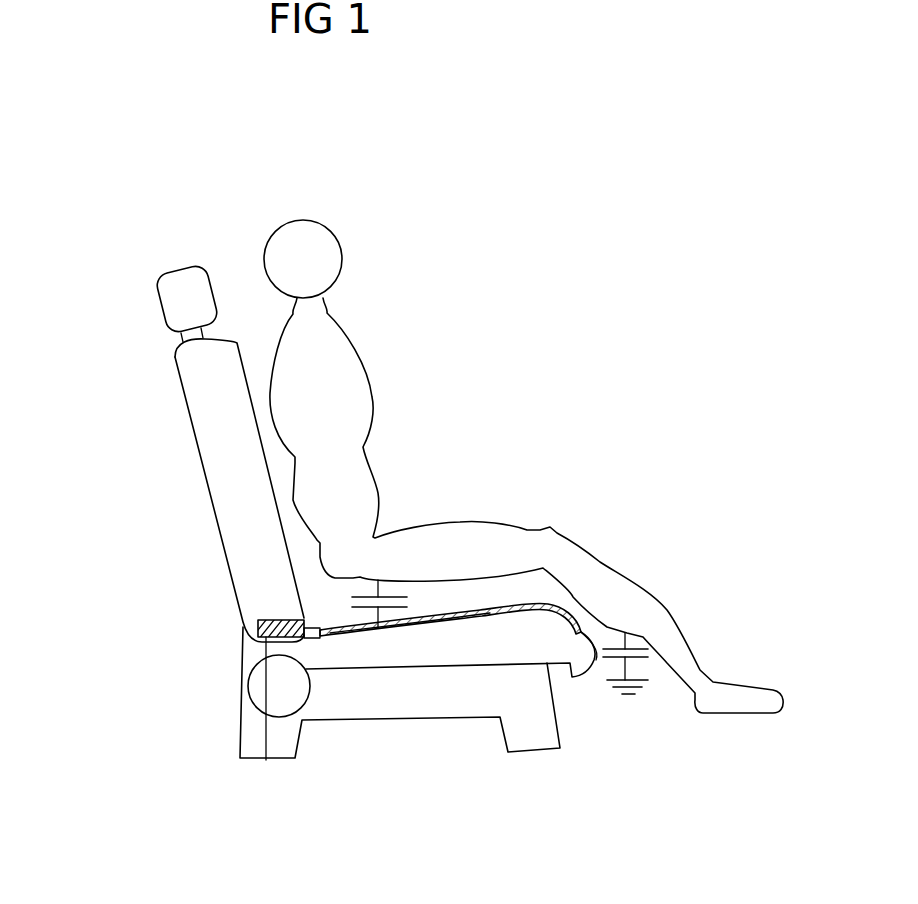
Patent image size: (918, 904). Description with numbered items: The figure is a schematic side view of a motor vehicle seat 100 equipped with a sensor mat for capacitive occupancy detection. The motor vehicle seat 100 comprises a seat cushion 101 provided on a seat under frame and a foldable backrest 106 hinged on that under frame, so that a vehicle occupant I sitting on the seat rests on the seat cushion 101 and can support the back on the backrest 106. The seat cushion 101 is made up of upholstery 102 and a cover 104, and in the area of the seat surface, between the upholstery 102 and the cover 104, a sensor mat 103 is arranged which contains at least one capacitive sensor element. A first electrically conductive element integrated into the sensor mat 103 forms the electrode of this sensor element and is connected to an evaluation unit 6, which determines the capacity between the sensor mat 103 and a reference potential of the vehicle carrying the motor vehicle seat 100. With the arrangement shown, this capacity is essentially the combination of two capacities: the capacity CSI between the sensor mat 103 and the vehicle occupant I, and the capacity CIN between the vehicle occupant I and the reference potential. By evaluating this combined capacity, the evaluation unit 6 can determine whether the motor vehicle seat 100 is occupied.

The vehicle occupant I is at (385, 395).
The motor vehicle seat 100 is at (415, 526).
The seat cushion 101 is at (607, 625).
The upholstery 102 is at (437, 648).
The sensor mat 103 is at (533, 605).
The cover 104 is at (505, 607).
The backrest 106 is at (207, 492).
The evaluation unit 6 is at (257, 625).
The capacity between the sensor mat and the vehicle occupant CSI is at (403, 604).
The capacity between the vehicle occupant and the reference potential CIN is at (643, 675).